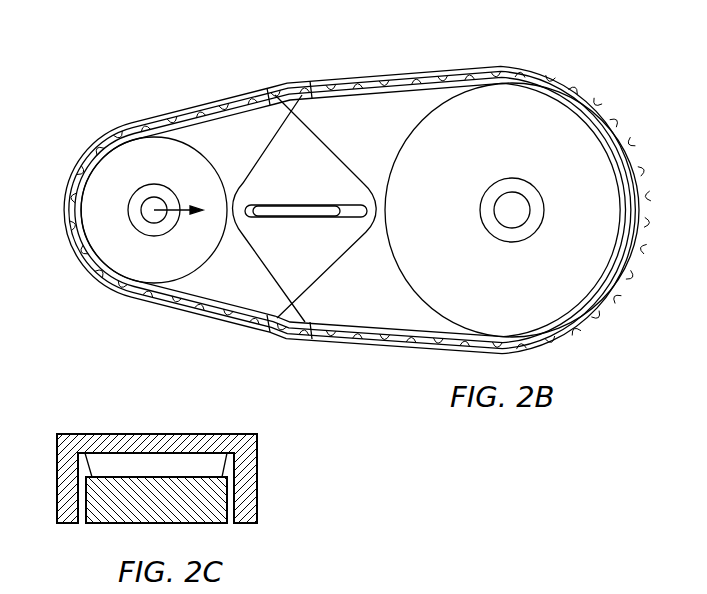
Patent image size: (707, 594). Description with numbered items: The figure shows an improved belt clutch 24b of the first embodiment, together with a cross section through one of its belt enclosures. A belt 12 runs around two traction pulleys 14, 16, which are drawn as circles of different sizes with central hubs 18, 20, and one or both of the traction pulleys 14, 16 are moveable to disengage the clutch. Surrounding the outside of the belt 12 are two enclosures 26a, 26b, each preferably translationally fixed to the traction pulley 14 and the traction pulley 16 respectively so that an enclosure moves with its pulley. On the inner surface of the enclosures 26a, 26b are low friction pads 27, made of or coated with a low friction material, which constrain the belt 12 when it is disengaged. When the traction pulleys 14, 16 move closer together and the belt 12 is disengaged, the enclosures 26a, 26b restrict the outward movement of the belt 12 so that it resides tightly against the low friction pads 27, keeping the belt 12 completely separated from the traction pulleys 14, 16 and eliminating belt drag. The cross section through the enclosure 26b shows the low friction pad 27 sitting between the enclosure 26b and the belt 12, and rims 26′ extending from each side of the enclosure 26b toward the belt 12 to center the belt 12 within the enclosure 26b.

In FIG. 2B, the improved belt clutch 24b is at (163, 81).
In FIG. 2B, the traction pulley 14 is at (133, 167).
In FIG. 2B, the first pulley shaft 18 is at (155, 218).
In FIG. 2B, the traction pulley 16 is at (472, 153).
In FIG. 2B, the second pulley shaft 20 is at (510, 212).
In FIG. 2B, the belt 12 is at (286, 323).
In FIG. 2C, the belt 12 is at (110, 522).
In FIG. 2B, the low friction pad 27 is at (193, 113).
In FIG. 2C, the low friction pad 27 is at (143, 477).
In FIG. 2B, the enclosure 26a is at (210, 318).
In FIG. 2B, the enclosure 26b is at (368, 345).
In FIG. 2C, the enclosure 26b is at (147, 440).
In FIG. 2C, the rim 26′ is at (67, 490).